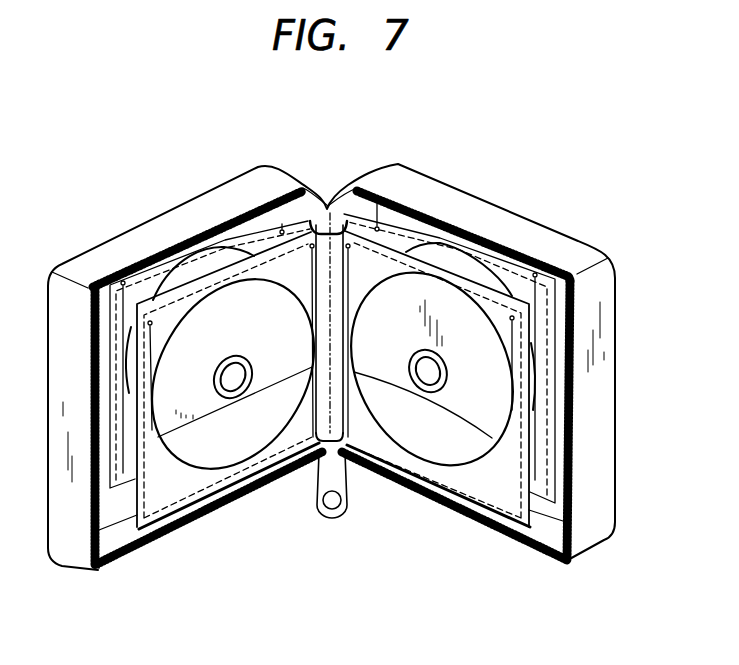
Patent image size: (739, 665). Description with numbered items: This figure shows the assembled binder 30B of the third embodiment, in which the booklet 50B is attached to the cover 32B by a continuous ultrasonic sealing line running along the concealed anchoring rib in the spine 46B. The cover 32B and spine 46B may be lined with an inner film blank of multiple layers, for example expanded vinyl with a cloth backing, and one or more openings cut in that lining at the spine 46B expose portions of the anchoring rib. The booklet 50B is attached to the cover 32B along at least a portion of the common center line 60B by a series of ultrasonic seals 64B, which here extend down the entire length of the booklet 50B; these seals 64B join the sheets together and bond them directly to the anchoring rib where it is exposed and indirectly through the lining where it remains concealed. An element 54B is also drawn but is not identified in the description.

The binder 30B is at (546, 562).
The cover 32B is at (565, 240).
The spine 46B is at (345, 410).
The booklet 50B is at (318, 410).
The second disc sleeve panel 54B is at (493, 482).
The common center line 60B is at (310, 223).
The ultrasonic seals 64B is at (338, 272).